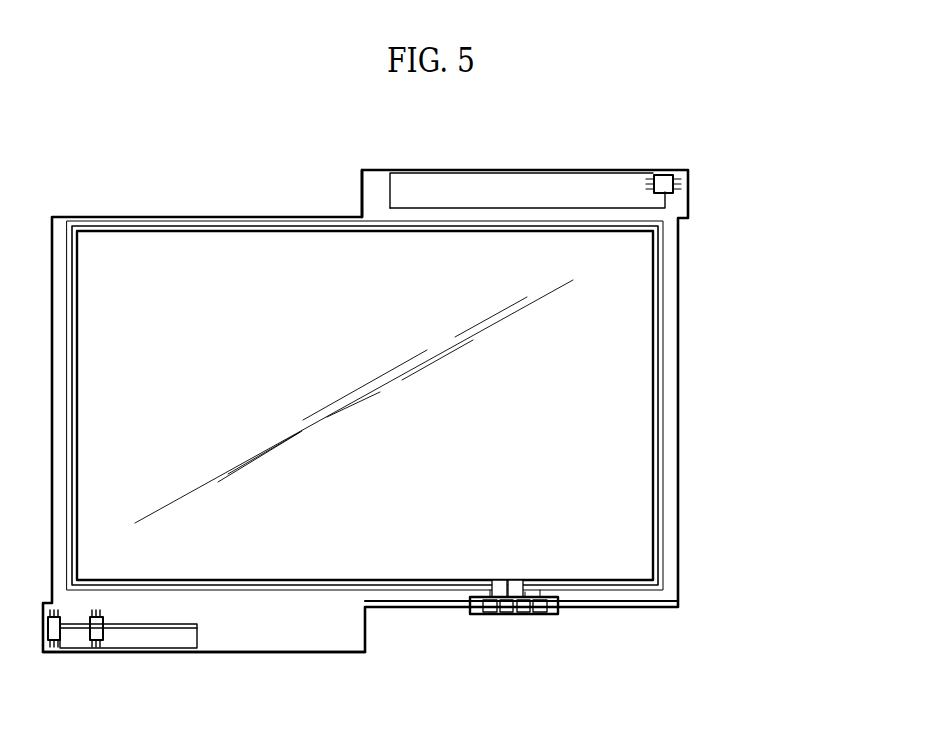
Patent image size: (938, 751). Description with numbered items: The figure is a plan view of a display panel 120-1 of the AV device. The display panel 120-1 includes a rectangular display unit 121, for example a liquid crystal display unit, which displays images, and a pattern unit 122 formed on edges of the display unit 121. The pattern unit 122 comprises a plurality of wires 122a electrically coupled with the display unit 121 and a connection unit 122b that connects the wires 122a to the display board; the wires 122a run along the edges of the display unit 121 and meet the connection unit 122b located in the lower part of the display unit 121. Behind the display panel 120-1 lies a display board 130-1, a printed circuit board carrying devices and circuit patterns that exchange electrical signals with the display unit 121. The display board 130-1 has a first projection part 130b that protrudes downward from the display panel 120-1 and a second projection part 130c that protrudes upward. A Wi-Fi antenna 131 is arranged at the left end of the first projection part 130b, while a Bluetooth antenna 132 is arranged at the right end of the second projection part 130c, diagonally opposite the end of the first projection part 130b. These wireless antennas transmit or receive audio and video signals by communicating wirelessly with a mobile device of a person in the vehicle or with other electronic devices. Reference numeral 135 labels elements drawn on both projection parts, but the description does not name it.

The display board 130-1 is at (703, 184).
The second projection part 130c is at (373, 185).
The first projection part 130b is at (282, 633).
The flexible printed circuit board 135 is at (532, 208).
The Bluetooth antenna 132 is at (663, 175).
The display panel 120-1 is at (684, 427).
The display unit 121 is at (627, 363).
The Wi-Fi antenna 131 is at (90, 643).
The pattern unit 122 is at (552, 642).
The wires 122a is at (517, 662).
The connection unit 122b is at (522, 615).